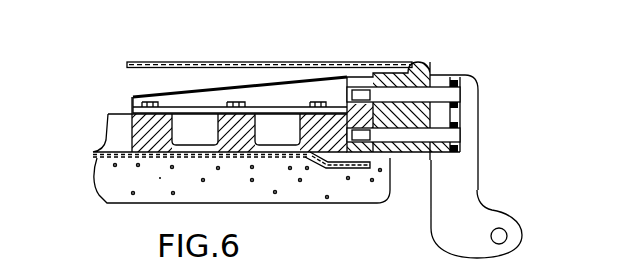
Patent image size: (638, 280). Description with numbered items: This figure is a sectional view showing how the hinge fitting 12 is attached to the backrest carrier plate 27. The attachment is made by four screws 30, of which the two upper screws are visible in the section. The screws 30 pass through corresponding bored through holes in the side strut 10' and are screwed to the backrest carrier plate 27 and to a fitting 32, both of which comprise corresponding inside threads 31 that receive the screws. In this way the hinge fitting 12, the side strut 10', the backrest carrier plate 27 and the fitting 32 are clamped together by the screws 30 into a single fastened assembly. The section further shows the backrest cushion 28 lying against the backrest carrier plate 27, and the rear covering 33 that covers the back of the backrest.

The side strut 10' is at (454, 207).
The hinge fitting 12 is at (463, 197).
The backrest carrier plate 27 is at (115, 135).
The backrest cushion 28 is at (110, 188).
The screws 30 is at (458, 133).
The inside threads 31 is at (348, 168).
The fitting 32 is at (285, 93).
The rear covering 33 is at (163, 62).